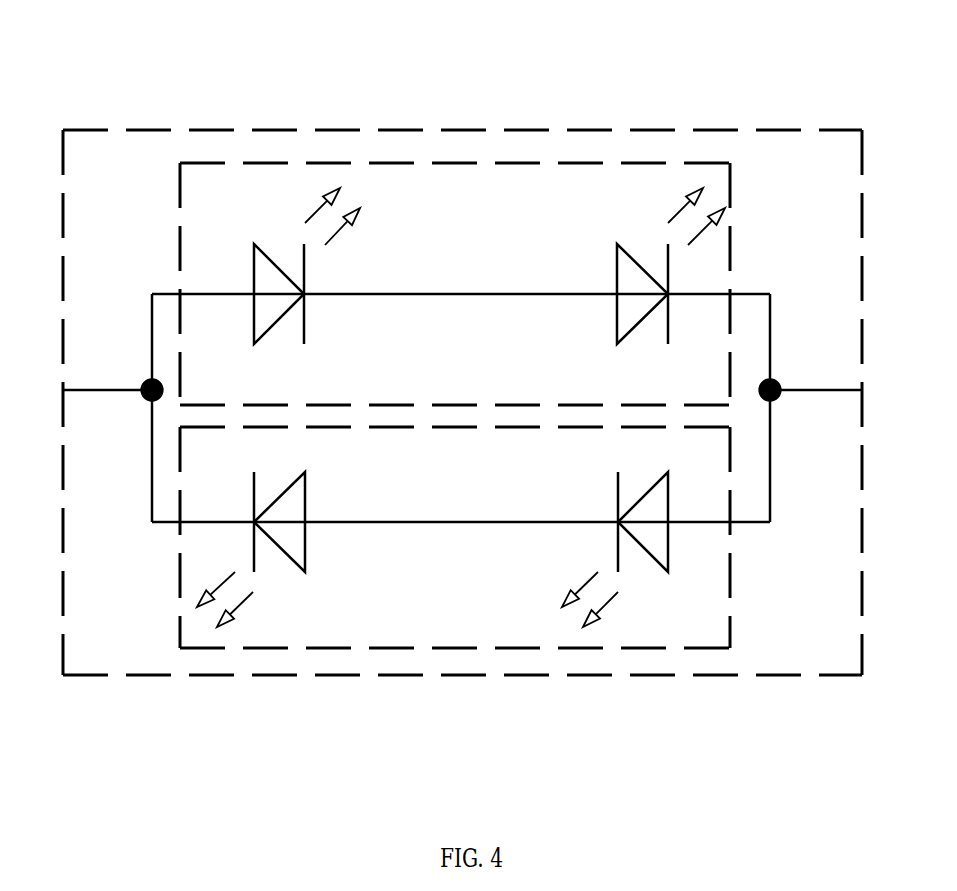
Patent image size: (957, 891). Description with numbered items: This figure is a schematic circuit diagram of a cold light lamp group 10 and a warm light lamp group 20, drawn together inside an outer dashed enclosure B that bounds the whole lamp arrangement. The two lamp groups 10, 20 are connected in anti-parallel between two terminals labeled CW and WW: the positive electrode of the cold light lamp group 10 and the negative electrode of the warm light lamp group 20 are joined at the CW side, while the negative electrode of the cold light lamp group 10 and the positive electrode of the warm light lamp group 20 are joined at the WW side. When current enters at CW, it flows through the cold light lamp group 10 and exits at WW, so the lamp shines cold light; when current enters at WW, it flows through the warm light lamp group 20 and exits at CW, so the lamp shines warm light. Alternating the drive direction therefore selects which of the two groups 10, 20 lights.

The light emitting module B is at (462, 400).
The cold light lamp group 10 is at (425, 193).
The warm light lamp group 20 is at (425, 615).